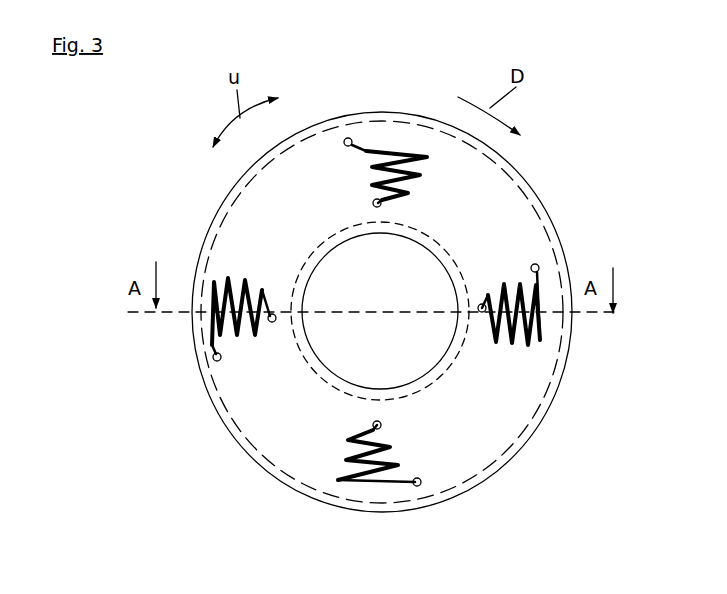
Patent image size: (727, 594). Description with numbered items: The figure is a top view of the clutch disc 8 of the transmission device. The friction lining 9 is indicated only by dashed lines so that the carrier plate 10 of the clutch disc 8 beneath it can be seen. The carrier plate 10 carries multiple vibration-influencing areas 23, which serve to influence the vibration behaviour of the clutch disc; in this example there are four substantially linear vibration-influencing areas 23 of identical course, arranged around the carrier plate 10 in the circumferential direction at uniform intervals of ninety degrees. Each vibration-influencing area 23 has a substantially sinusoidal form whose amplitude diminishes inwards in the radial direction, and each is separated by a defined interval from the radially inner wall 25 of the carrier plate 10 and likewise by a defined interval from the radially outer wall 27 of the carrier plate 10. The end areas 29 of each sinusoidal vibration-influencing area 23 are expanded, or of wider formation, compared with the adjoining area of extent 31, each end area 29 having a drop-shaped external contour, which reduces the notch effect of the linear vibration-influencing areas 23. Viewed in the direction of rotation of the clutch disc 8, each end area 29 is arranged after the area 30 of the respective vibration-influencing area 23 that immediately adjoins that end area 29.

The clutch disc 8 is at (543, 130).
The friction lining 9 is at (520, 185).
The carrier plate 10 is at (553, 392).
The vibration-influencing area 23 is at (384, 302).
The radially inner wall 25 is at (370, 390).
The radially outer wall 27 is at (532, 433).
The end area 29 is at (344, 145).
The area immediately adjoining the end area 30 is at (352, 137).
The area of extent 31 is at (408, 160).